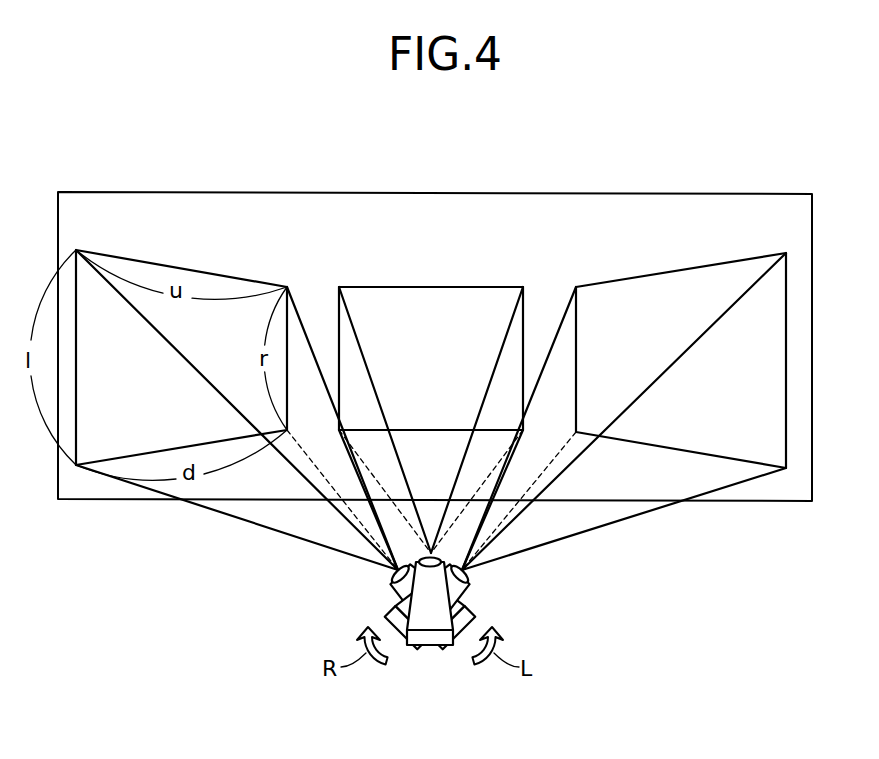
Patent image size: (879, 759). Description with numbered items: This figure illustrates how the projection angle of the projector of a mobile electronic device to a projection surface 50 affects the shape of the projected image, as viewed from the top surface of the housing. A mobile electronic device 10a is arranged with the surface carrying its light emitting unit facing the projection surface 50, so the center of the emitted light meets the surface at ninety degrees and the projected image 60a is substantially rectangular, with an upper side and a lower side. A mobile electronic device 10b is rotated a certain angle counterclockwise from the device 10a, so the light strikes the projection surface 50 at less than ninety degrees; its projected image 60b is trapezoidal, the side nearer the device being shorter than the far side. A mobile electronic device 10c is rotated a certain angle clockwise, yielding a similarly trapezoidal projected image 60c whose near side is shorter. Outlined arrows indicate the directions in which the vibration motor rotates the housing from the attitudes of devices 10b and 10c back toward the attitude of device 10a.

The projection surface 50 is at (556, 194).
The projected image 60a is at (431, 287).
The projected image 60b is at (217, 274).
The projected image 60c is at (637, 277).
The mobile electronic device 10a is at (425, 619).
The mobile electronic device 10b is at (388, 589).
The mobile electronic device 10c is at (472, 589).